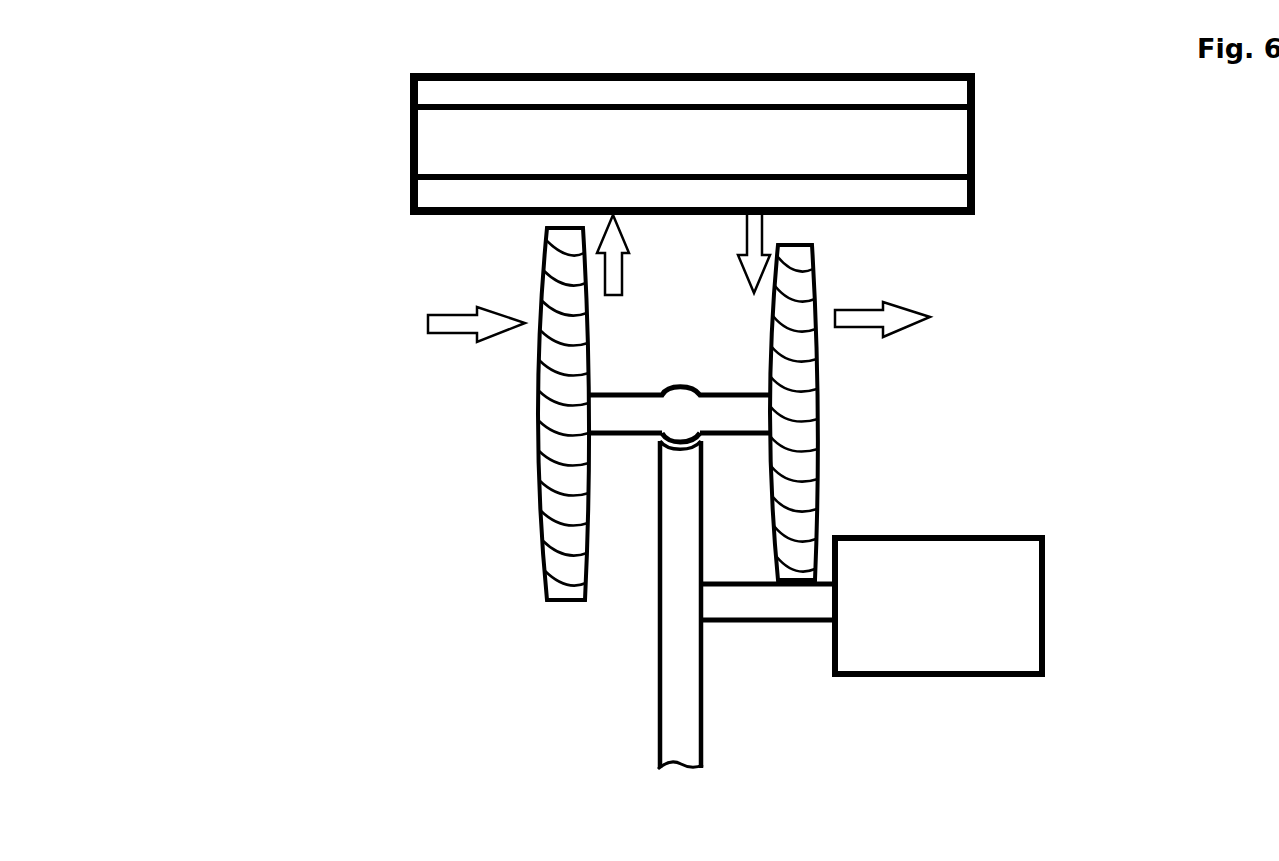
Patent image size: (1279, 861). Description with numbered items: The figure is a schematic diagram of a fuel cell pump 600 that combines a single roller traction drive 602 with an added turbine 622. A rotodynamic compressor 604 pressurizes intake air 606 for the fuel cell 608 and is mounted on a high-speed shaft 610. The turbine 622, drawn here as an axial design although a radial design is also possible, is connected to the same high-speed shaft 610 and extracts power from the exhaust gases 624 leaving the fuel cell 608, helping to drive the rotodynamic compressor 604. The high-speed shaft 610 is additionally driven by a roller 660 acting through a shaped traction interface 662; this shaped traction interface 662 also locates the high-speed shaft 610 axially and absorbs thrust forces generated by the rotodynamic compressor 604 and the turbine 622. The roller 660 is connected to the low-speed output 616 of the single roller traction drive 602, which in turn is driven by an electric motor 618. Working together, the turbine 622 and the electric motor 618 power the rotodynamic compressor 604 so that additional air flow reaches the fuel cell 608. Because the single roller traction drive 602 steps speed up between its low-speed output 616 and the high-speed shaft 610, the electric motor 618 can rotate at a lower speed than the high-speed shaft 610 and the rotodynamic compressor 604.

The fuel cell pump 600 is at (348, 140).
The single roller traction drive 602 is at (415, 487).
The rotodynamic compressor 604 is at (553, 487).
The intake air 606 is at (465, 322).
The fuel cell 608 is at (638, 148).
The high-speed shaft 610 is at (735, 415).
The low-speed output 616 is at (745, 597).
The electric motor 618 is at (907, 643).
The turbine 622 is at (793, 510).
The exhaust gases 624 is at (765, 241).
The roller 660 is at (675, 653).
The shaped traction interface 662 is at (680, 453).